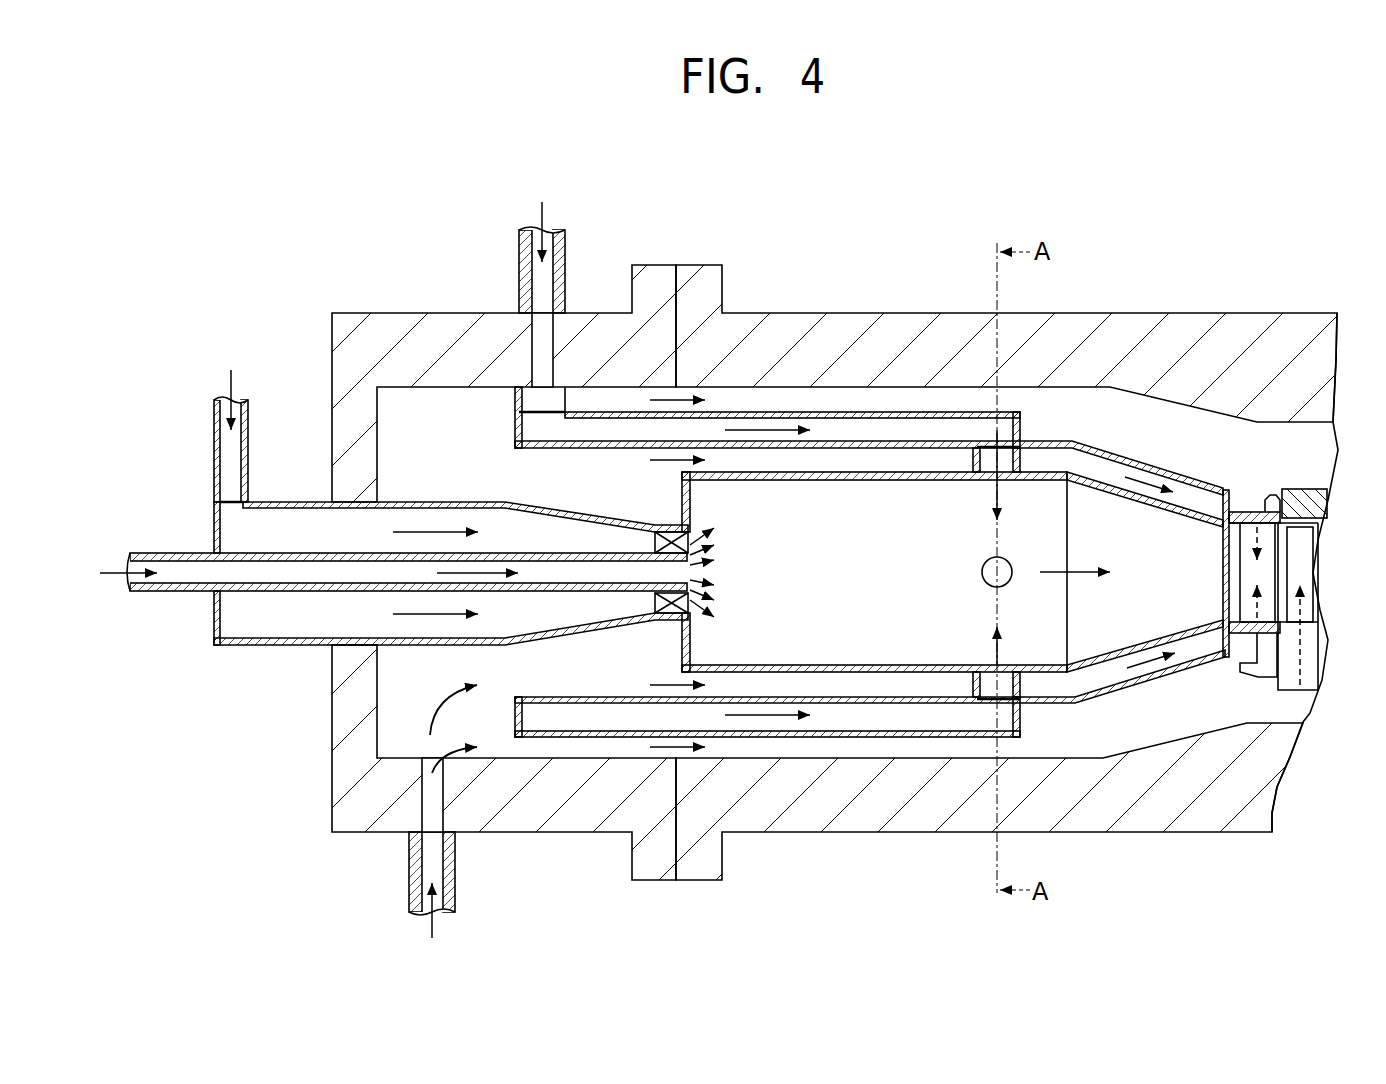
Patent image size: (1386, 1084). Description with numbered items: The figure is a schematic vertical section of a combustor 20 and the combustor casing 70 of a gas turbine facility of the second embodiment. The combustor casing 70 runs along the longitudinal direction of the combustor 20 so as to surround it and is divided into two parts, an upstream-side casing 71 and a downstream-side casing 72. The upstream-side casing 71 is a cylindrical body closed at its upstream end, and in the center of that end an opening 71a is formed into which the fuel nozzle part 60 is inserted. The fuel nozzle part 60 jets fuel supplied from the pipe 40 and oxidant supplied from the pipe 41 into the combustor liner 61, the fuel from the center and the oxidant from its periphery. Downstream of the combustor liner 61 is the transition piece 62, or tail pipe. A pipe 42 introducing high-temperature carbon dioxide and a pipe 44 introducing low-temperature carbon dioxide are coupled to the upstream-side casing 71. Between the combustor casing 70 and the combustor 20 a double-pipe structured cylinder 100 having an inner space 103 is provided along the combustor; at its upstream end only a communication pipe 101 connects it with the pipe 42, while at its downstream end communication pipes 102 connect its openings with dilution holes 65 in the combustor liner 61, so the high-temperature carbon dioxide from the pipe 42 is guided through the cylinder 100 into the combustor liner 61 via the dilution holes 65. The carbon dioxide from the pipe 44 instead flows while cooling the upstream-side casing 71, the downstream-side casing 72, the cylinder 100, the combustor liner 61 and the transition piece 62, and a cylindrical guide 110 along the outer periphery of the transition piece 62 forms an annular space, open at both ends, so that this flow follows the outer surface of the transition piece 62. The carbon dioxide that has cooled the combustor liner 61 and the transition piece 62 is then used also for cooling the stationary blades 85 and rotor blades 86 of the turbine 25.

The combustor casing 70 is at (805, 504).
The upstream-side casing 71 is at (474, 570).
The opening 71a is at (355, 648).
The downstream-side casing 72 is at (898, 325).
The combustor 20 is at (920, 655).
The fuel nozzle part 60 is at (407, 528).
The combustor liner 61 is at (880, 672).
The transition piece 62 is at (1182, 665).
The dilution holes 65 is at (982, 572).
The pipe 40 is at (170, 587).
The pipe 41 is at (213, 455).
The pipe 42 is at (518, 268).
The pipe 44 is at (413, 872).
The cylinder 100 is at (836, 568).
The communication pipe 101 is at (835, 442).
The communication pipes 102 is at (1027, 452).
The inner space 103 is at (575, 430).
The guide 110 is at (1127, 685).
The turbine 25 is at (1325, 457).
The stationary blades 85 is at (1267, 558).
The rotor blades 86 is at (1305, 585).